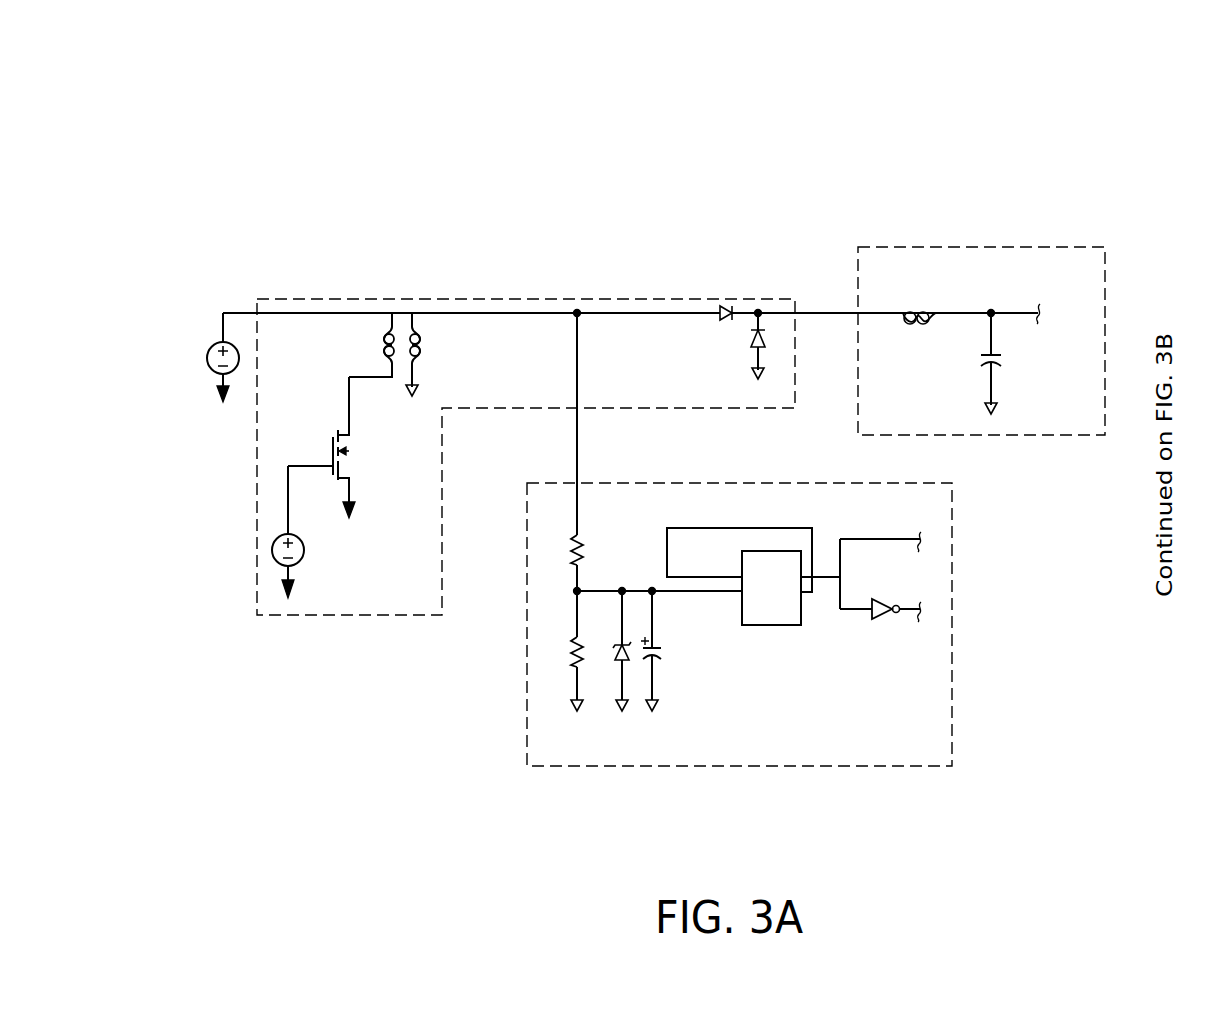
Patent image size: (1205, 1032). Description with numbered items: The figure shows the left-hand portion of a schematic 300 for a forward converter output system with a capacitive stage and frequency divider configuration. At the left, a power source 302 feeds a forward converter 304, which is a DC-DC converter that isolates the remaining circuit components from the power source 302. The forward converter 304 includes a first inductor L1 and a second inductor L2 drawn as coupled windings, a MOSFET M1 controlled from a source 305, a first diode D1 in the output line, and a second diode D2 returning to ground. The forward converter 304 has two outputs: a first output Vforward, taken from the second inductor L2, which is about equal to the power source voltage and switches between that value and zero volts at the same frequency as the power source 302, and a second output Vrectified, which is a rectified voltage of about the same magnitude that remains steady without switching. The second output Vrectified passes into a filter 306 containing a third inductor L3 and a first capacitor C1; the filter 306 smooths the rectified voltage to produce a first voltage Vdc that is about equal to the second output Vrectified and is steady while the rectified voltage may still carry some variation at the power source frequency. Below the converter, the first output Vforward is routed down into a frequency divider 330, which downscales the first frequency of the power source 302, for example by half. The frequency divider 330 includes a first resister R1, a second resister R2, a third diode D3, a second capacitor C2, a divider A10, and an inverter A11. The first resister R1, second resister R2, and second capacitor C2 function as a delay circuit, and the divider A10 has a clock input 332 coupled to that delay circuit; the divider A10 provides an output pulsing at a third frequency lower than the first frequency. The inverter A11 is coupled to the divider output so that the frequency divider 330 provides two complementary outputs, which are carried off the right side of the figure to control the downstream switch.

The schematic 300 is at (133, 108).
The power source 302 is at (208, 368).
The forward converter 304 is at (334, 299).
The gate drive voltage source 305 is at (306, 548).
The filter 306 is at (948, 247).
The frequency divider 330 is at (713, 767).
The clock input 332 is at (742, 594).
The first inductor L1 is at (383, 340).
The second inductor L2 is at (420, 340).
The third inductor L3 is at (904, 313).
The switching transistor M1 is at (350, 466).
The first diode D1 is at (724, 309).
The second diode D2 is at (767, 340).
The third diode D3 is at (620, 660).
The first resister R1 is at (580, 540).
The second resister R2 is at (572, 646).
The first capacitor C1 is at (985, 355).
The second capacitor C2 is at (658, 651).
The divider A10 is at (773, 551).
The inverter A11 is at (880, 616).
The first output Vforward is at (507, 313).
The second output Vrectified is at (808, 313).
The first voltage Vdc is at (956, 313).